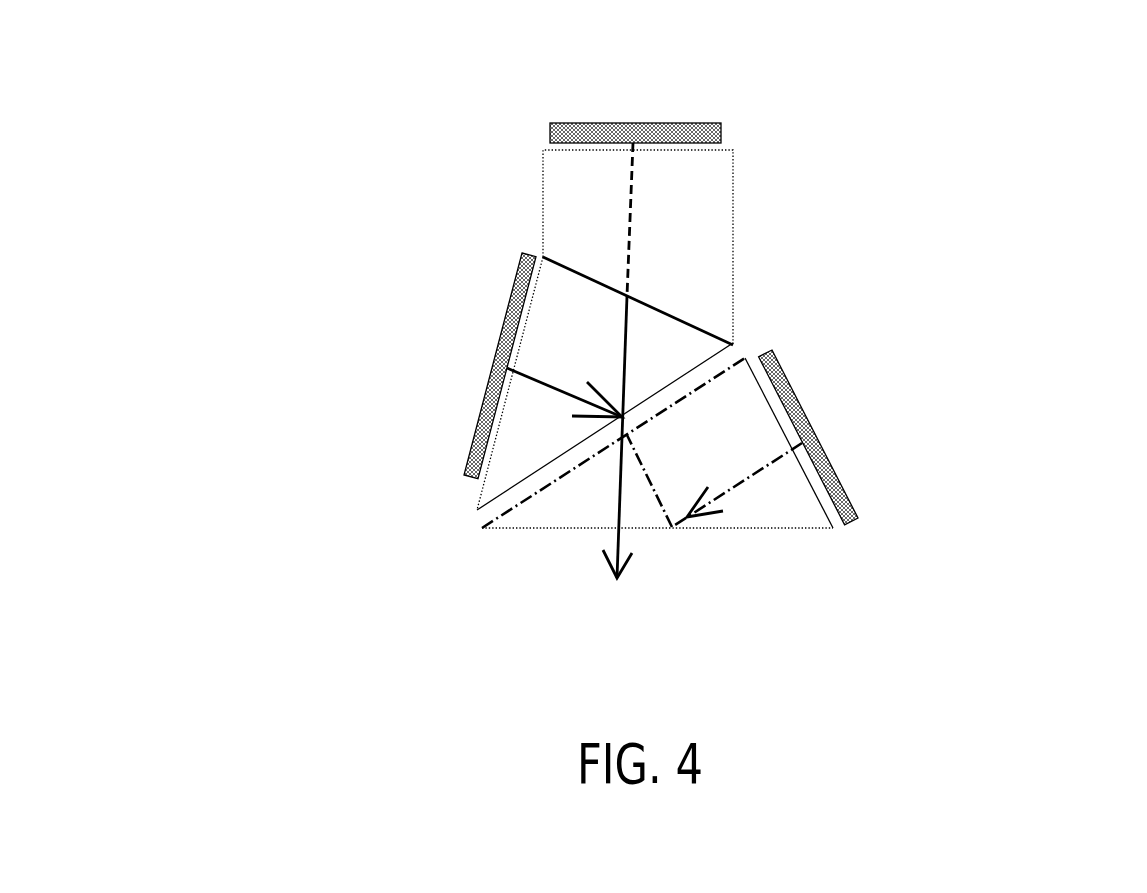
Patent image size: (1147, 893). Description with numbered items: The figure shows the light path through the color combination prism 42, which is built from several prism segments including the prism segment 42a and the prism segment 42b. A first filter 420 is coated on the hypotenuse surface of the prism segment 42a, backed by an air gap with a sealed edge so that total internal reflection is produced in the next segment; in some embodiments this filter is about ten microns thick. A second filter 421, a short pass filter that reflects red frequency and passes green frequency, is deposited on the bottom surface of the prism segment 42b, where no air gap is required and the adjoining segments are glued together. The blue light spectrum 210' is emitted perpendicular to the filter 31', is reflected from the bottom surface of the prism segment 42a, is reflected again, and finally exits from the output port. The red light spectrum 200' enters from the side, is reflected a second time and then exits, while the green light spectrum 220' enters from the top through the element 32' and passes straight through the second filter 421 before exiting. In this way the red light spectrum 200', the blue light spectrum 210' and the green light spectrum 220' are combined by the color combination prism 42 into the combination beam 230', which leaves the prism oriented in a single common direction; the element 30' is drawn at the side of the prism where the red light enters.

The color combination prism 42 is at (782, 309).
The prism segment 42a is at (735, 393).
The prism segment 42b is at (702, 188).
The second filter 421 is at (684, 316).
The first filter 420 is at (535, 497).
The light valve / light source 32' is at (635, 88).
The light source 30' is at (457, 366).
The filter 31' is at (660, 482).
The red light spectrum 200' is at (518, 340).
The blue light spectrum 210' is at (789, 520).
The green light spectrum 220' is at (532, 360).
The combination beam 230' is at (680, 510).